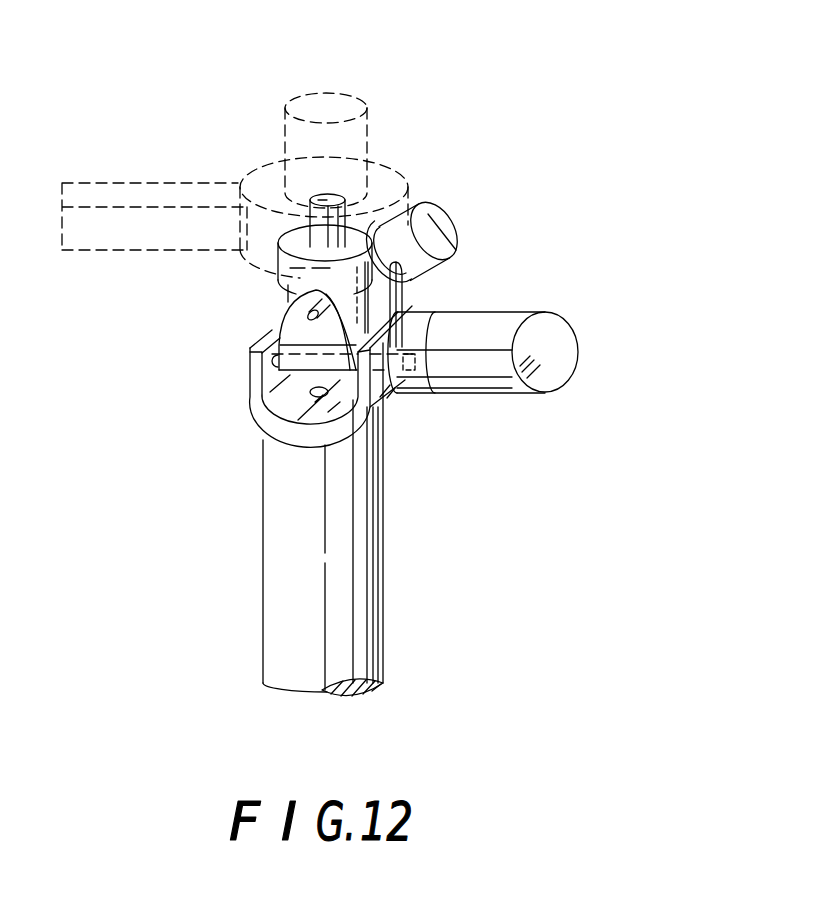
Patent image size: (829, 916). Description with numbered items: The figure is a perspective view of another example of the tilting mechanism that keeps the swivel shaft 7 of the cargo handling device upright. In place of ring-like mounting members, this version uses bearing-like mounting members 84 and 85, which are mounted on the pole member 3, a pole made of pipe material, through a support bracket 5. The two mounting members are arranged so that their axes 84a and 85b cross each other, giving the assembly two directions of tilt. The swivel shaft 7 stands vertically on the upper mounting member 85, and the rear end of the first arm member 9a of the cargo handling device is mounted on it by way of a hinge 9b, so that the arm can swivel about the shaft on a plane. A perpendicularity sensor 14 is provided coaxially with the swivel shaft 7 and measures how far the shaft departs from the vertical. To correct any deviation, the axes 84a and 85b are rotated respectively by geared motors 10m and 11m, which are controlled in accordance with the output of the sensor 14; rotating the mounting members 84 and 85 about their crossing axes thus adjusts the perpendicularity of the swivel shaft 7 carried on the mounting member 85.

The pole member 3 is at (358, 510).
The support bracket 5 is at (249, 376).
The swivel shaft 7 is at (329, 197).
The first arm member 9a is at (166, 183).
The hinge 9b is at (403, 172).
The geared motor 10m is at (548, 350).
The geared motor 11m is at (445, 230).
The perpendicularity sensor 14 is at (367, 147).
The bearing-like mounting member 84 is at (282, 328).
The axis of the bearing-like mounting member 84a is at (251, 368).
The bearing-like mounting member 85 is at (365, 297).
The axis of the bearing-like mounting member 85b is at (285, 313).